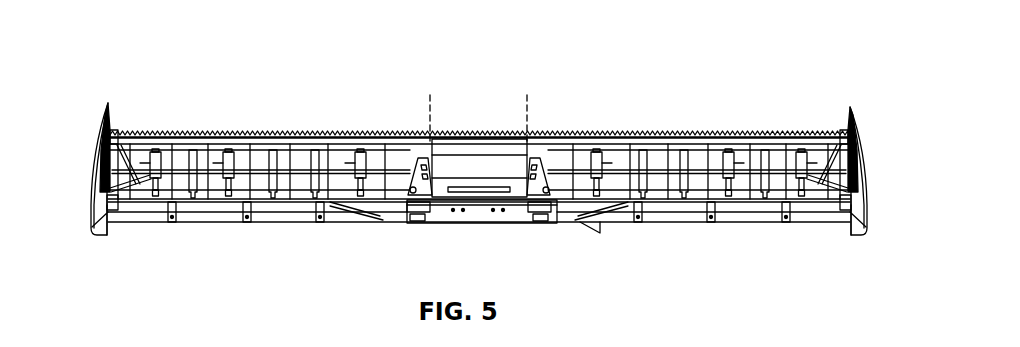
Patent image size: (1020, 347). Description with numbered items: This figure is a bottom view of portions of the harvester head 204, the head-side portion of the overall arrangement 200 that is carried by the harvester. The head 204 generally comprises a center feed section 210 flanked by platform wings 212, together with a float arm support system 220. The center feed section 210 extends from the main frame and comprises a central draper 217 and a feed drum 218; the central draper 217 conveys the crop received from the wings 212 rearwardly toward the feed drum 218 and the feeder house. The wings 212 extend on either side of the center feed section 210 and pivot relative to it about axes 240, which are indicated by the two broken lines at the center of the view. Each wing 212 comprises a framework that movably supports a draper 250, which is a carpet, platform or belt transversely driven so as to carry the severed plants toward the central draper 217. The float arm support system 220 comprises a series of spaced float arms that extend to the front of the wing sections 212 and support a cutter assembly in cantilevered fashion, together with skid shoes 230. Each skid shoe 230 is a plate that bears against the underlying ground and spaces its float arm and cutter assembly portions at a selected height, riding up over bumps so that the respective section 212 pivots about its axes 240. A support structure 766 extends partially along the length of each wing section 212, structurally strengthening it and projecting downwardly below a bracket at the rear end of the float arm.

The fluid applicator assembly 200 is at (145, 42).
The head 204 is at (100, 135).
The center feed section 210 is at (583, 132).
The platform wings 212 is at (142, 196).
The central draper 217 is at (495, 162).
The feed drum 218 is at (445, 205).
The float arm support system 220 is at (166, 160).
The skid shoes 230 is at (112, 182).
The axes 240 is at (432, 93).
The draper 250 is at (246, 176).
The support structure 766 is at (300, 175).